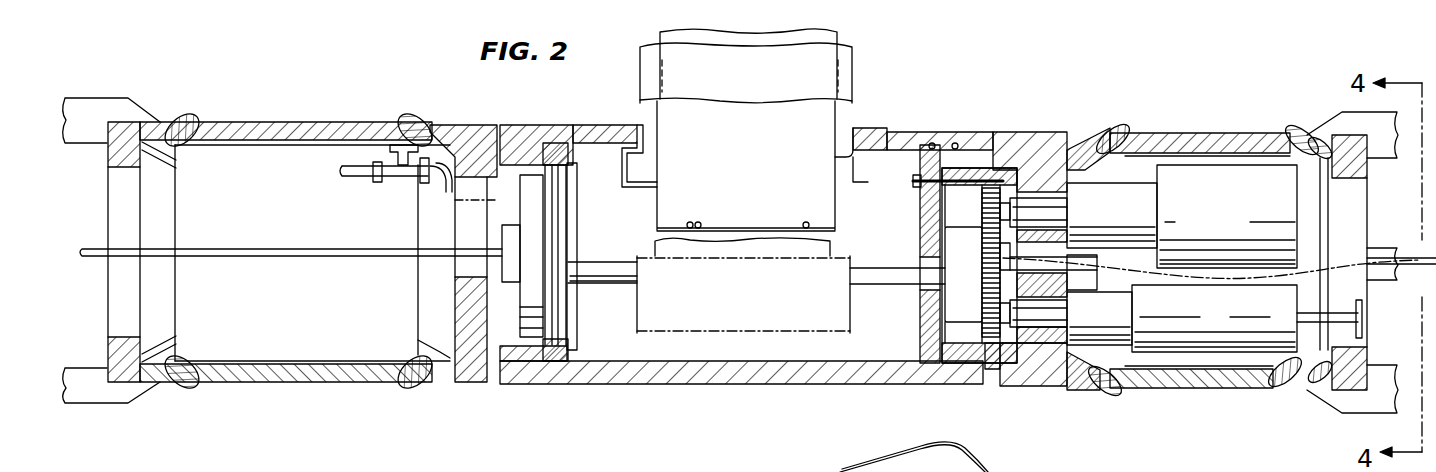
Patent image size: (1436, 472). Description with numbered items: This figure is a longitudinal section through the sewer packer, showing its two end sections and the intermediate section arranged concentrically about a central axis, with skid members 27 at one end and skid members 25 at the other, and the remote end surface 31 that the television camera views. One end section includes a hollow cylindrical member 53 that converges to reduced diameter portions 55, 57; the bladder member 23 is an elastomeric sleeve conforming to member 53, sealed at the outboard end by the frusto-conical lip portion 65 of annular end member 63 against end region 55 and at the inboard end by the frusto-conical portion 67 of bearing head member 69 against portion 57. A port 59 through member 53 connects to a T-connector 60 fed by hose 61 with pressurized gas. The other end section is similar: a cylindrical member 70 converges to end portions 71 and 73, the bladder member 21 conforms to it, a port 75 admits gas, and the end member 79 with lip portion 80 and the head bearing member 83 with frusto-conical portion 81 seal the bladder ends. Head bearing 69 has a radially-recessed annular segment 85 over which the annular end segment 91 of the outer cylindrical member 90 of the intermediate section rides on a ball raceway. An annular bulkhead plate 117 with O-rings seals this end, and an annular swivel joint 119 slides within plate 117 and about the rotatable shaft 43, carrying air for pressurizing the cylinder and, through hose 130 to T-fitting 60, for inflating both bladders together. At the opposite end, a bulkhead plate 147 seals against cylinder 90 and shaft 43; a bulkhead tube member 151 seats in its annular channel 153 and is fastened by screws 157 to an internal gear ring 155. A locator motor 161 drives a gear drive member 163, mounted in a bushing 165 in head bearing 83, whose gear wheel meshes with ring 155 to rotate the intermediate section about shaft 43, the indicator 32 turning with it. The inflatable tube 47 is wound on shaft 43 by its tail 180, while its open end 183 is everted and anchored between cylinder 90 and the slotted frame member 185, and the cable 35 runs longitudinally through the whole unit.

The bladder member 21 is at (1186, 390).
The bladder member 23 is at (258, 120).
The skid members 25 is at (1382, 103).
The skid members 27 is at (83, 103).
The remote end surface 31 is at (1368, 207).
The indicator 32 is at (1363, 327).
The cable 35 is at (270, 248).
The rotatable shaft 43 is at (598, 270).
The inflatable tube 47 is at (845, 85).
The cylindrical member 53 is at (213, 147).
The reduced diameter portion 55 is at (158, 352).
The reduced diameter portion 57 is at (437, 346).
The port 59 is at (420, 123).
The T-connector 60 is at (405, 170).
The hose 61 is at (350, 178).
The annular end member 63 is at (113, 153).
The frusto-conical interior lip portion 65 is at (197, 118).
The frusto-conical interior portion 67 is at (440, 388).
The bearing head member 69 is at (467, 372).
The cylindrical member 70 is at (1225, 133).
The reduced diameter end portion 71 is at (1265, 393).
The reduced diameter end portion 73 is at (1088, 129).
The port 75 is at (1133, 128).
The annular end member 79 is at (1167, 131).
The frusto-conical interior lip portion 80 is at (1302, 128).
The frusto-conical interior portion 81 is at (1092, 390).
The head bearing member 83 is at (1005, 132).
The radially-recessed annular segment 85 is at (515, 155).
The outer hollow cylindrical member 90 is at (753, 378).
The annular end segment 91 is at (517, 384).
The annular bulkhead plate 117 is at (578, 384).
The annular swivel joint 119 is at (535, 182).
The hose 130 is at (450, 192).
The annular bulkhead plate 147 is at (920, 203).
The bulkhead tube member 151 is at (920, 338).
The annular channel 153 is at (910, 184).
The internal gear ring 155 is at (993, 388).
The screws 157 is at (1035, 165).
The locator motor 161 is at (1157, 353).
The gear drive member 163 is at (1045, 388).
The bushing 165 is at (1005, 390).
The tail 180 is at (825, 42).
The open end 183 is at (640, 180).
The slotted frame member 185 is at (870, 128).